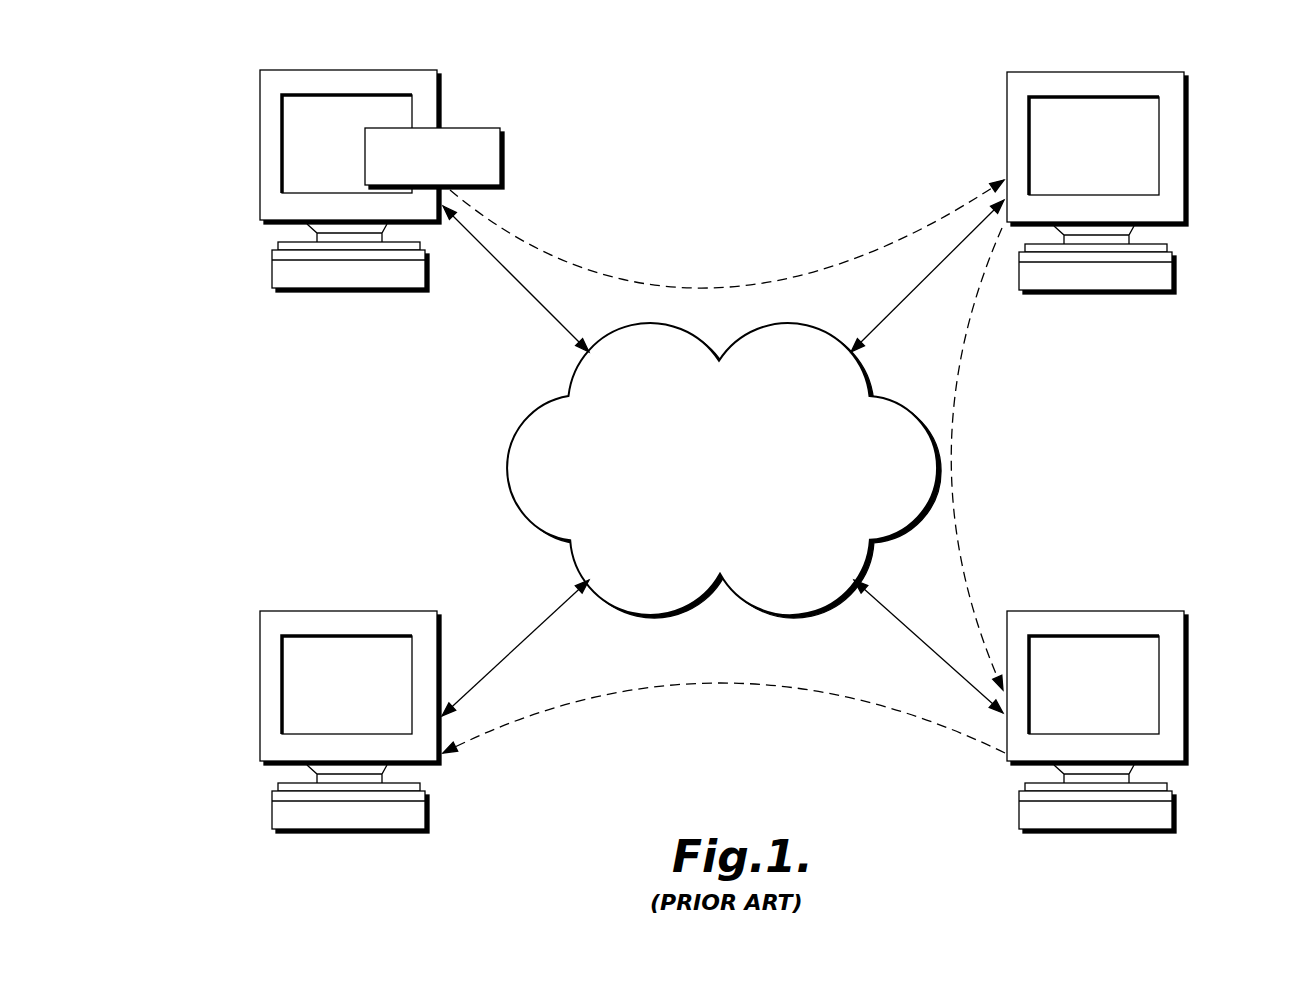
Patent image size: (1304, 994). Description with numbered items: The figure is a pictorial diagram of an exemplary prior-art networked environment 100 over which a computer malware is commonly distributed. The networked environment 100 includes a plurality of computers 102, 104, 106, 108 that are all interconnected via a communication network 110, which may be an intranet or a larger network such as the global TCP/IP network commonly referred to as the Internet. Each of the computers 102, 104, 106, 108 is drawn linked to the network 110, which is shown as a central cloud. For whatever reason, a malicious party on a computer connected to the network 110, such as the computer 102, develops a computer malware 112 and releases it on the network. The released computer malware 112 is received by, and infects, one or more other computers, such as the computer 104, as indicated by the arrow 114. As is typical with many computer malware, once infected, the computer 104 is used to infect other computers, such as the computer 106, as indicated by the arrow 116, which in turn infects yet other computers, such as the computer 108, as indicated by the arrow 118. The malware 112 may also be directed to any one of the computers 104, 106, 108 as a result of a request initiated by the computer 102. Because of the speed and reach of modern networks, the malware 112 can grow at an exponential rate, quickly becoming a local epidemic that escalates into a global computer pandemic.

The networked environment 100 is at (688, 106).
The computer 102 is at (260, 157).
The computer 104 is at (1185, 153).
The computer 106 is at (1185, 713).
The computer 108 is at (259, 712).
The communication network 110 is at (507, 450).
The computer malware 112 is at (500, 156).
The arrow 114 is at (705, 287).
The arrow 116 is at (952, 462).
The arrow 118 is at (722, 684).